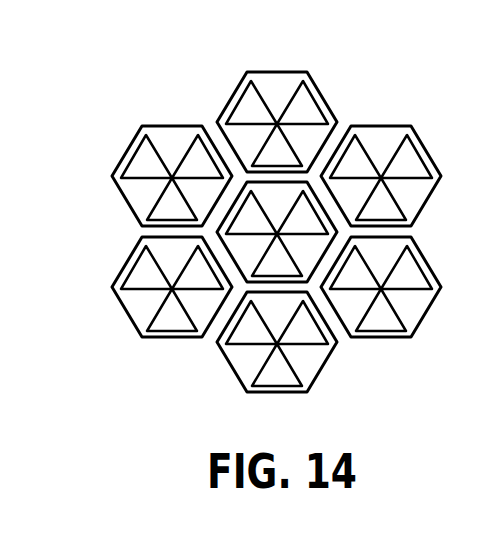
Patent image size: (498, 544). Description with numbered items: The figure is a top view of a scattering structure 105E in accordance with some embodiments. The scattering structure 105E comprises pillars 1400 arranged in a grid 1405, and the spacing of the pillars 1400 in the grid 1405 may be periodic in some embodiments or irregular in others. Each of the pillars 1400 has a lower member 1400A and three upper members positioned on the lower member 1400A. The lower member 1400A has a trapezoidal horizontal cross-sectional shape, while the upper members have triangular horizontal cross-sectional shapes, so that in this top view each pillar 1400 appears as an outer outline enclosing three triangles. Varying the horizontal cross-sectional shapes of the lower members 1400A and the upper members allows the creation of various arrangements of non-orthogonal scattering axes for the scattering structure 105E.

The scattering structure 105E is at (105, 53).
The pillar 1400 is at (228, 101).
The lower member 1400A is at (265, 73).
The grid 1405 is at (177, 350).